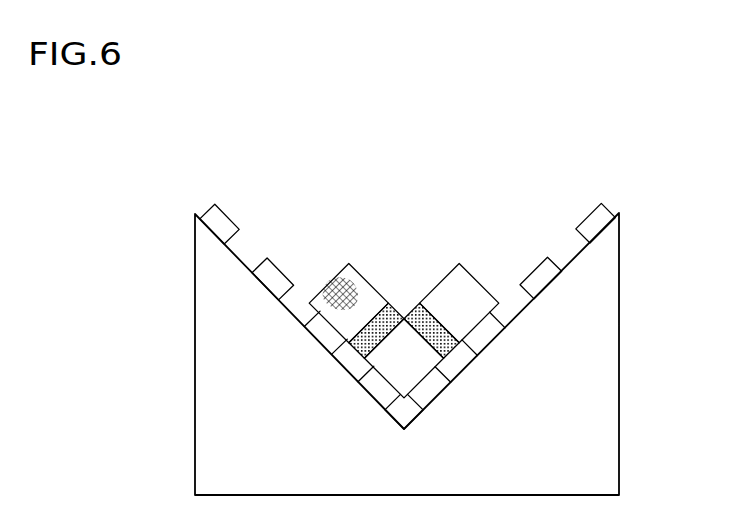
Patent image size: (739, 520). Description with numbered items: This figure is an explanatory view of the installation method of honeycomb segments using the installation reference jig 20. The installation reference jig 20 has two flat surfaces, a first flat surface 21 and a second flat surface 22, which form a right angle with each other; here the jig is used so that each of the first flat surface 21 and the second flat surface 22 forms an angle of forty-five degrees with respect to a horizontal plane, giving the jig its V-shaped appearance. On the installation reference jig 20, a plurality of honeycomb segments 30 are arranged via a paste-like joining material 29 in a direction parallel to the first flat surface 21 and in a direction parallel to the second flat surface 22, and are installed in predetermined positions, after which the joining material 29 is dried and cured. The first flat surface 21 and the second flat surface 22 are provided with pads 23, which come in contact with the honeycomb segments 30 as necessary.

The installation reference jig 20 is at (176, 305).
The first flat surface 21 is at (576, 252).
The second flat surface 22 is at (243, 260).
The pads 23 is at (550, 264).
The joining material 29 is at (376, 320).
The honeycomb segments 30 is at (458, 288).